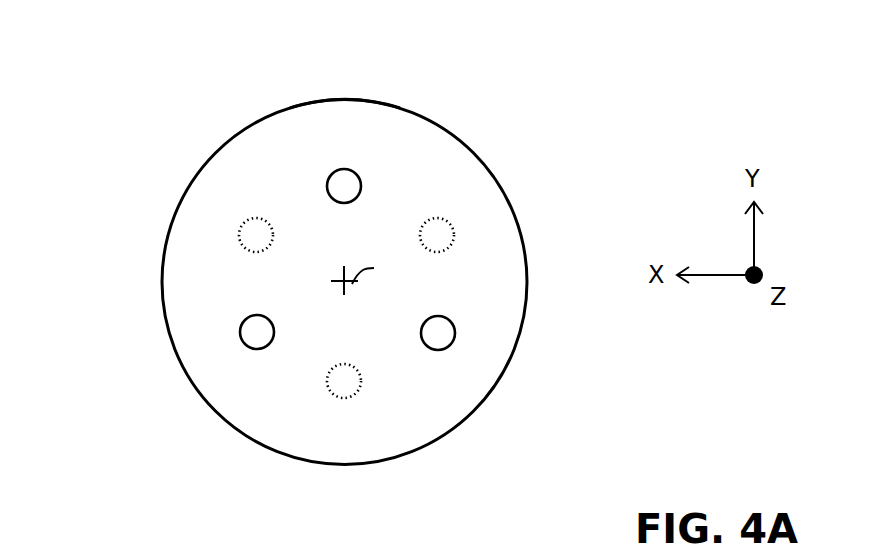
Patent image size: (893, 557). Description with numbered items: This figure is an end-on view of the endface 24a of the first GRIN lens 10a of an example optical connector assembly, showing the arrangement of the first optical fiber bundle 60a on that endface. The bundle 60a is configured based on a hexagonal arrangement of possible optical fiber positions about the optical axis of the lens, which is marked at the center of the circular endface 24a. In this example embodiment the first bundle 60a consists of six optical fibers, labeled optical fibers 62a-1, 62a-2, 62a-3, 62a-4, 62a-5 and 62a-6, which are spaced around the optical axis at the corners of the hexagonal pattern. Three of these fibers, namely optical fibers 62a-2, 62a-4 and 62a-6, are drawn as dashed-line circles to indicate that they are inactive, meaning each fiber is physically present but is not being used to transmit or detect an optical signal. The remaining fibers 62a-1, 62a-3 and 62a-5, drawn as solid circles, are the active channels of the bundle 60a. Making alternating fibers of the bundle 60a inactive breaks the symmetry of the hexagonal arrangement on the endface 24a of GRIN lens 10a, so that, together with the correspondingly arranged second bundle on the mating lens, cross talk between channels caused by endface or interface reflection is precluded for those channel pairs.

The GRIN lens 10a is at (236, 116).
The endface 24a is at (320, 133).
The first optical fiber bundle 60a is at (580, 75).
The optical fiber 62a-1 is at (246, 345).
The optical fiber 62a-2 is at (243, 222).
The optical fiber 62a-3 is at (348, 169).
The optical fiber 62a-4 is at (452, 226).
The optical fiber 62a-5 is at (455, 334).
The optical fiber 62a-6 is at (352, 396).